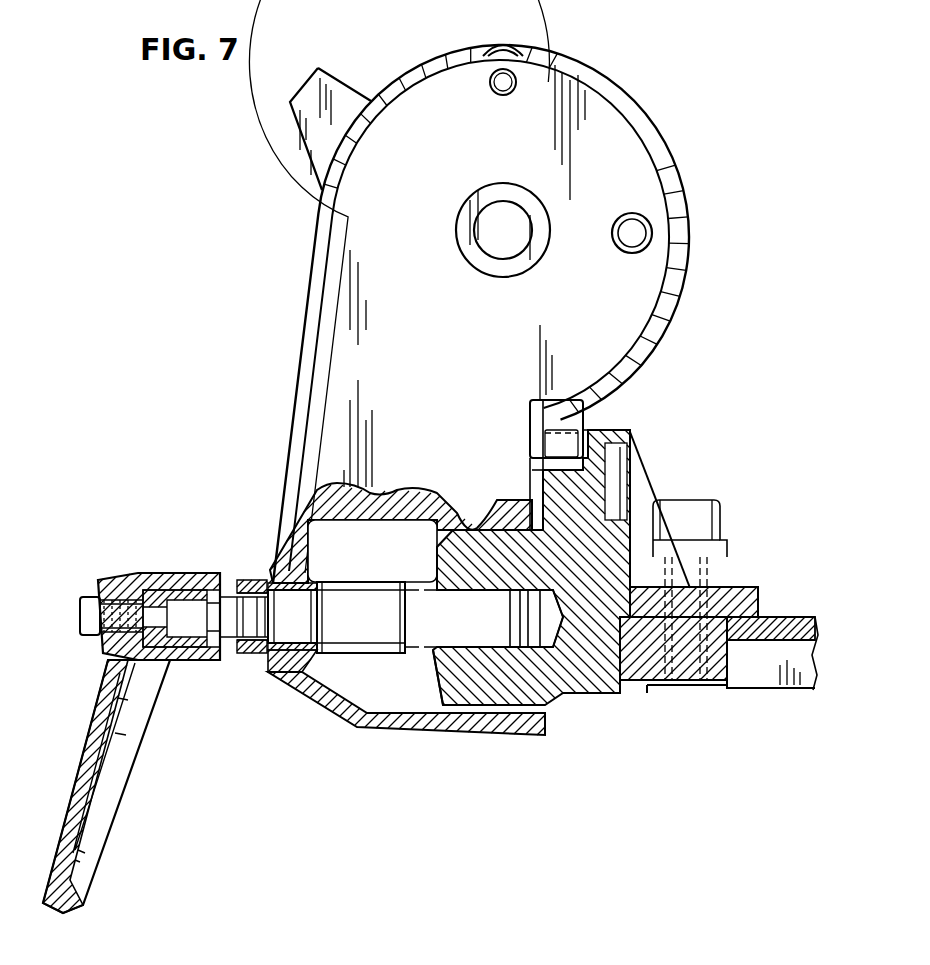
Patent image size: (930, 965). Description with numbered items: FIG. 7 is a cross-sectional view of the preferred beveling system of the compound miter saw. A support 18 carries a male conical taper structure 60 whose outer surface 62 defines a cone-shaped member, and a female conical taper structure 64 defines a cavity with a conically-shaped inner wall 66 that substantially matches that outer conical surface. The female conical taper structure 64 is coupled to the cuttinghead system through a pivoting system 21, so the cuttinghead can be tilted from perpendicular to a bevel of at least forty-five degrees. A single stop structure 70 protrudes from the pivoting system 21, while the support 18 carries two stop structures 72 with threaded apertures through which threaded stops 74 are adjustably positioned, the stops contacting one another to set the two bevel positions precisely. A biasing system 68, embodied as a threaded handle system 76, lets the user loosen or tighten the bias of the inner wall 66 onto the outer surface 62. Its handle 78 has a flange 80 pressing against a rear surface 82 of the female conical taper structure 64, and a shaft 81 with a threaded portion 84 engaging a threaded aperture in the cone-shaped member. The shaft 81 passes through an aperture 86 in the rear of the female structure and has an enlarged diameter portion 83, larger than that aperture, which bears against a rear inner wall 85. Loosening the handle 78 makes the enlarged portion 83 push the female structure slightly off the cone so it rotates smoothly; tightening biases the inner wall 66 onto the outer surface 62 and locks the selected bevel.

The support 18 is at (603, 695).
The pivoting system 21 is at (447, 337).
The male conical taper structure 60 is at (537, 583).
The outer surface 62 is at (463, 543).
The female conical taper structure 64 is at (380, 736).
The conically-shaped inner wall 66 is at (489, 525).
The biasing system 68 is at (195, 775).
The stop structure 70 is at (530, 432).
The stop structures 72 is at (586, 430).
The threaded stops 74 is at (540, 470).
The threaded handle system 76 is at (240, 578).
The handle 78 is at (470, 652).
The flange 80 is at (268, 652).
The shaft 81 is at (305, 626).
The rear surface 82 is at (265, 578).
The enlarged diameter portion 83 is at (371, 626).
The threaded portion 84 is at (476, 627).
The rear inner wall 85 is at (313, 574).
The aperture 86 is at (291, 664).